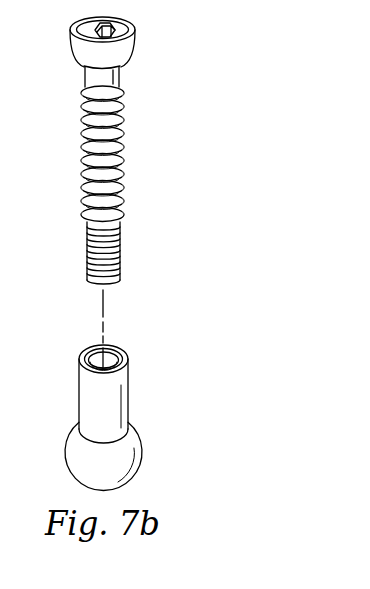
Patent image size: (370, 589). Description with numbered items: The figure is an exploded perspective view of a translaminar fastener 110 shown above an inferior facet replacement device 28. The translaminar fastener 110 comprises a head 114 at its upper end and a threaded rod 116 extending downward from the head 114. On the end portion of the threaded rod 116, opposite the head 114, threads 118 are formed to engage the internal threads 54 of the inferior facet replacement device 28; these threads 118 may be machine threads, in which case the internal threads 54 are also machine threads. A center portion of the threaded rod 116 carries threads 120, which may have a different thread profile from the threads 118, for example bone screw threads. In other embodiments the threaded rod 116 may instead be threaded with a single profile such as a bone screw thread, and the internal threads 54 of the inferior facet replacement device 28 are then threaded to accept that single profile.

The translaminar fastener 110 is at (124, 73).
The head 114 is at (70, 50).
The threaded rod 116 is at (81, 192).
The threads 118 is at (87, 258).
The threads 120 is at (125, 162).
The internal threads 54 is at (90, 345).
The inferior facet replacement device 28 is at (78, 399).